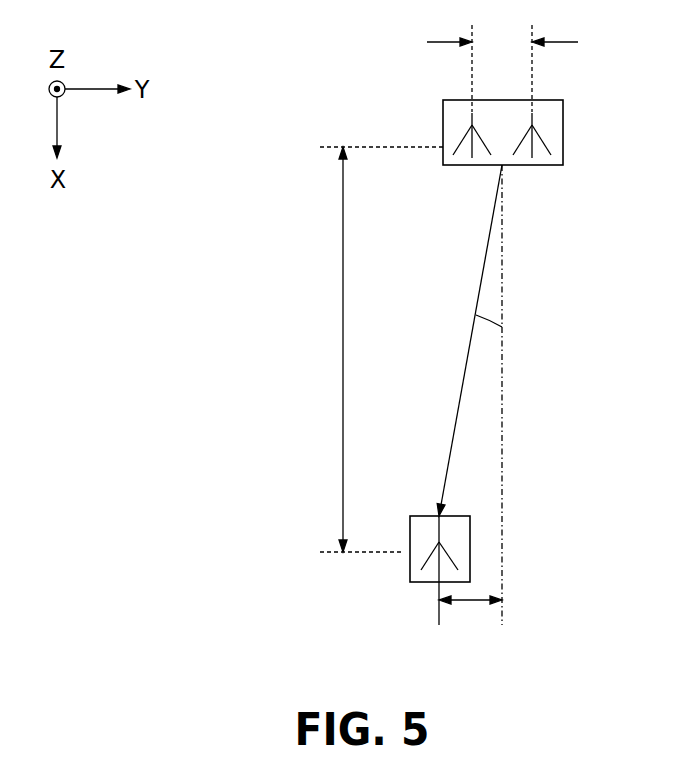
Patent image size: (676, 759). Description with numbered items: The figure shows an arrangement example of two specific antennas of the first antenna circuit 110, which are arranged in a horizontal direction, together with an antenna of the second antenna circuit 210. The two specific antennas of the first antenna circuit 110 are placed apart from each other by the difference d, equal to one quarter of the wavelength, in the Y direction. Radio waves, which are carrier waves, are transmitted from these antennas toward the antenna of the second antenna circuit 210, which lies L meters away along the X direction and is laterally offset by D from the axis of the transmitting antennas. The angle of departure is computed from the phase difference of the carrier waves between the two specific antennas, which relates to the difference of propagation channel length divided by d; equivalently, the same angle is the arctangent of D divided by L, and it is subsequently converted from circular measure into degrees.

The first antenna circuit 110 is at (443, 99).
The second antenna circuit 210 is at (410, 571).
The difference d is at (506, 62).
The distance L is at (379, 349).
The lateral offset D is at (470, 619).